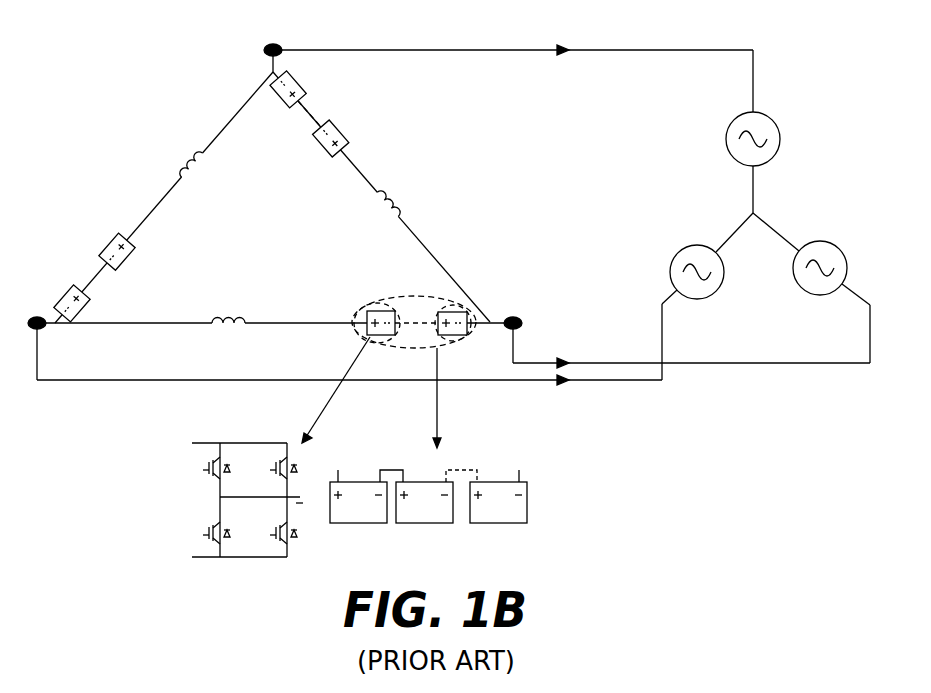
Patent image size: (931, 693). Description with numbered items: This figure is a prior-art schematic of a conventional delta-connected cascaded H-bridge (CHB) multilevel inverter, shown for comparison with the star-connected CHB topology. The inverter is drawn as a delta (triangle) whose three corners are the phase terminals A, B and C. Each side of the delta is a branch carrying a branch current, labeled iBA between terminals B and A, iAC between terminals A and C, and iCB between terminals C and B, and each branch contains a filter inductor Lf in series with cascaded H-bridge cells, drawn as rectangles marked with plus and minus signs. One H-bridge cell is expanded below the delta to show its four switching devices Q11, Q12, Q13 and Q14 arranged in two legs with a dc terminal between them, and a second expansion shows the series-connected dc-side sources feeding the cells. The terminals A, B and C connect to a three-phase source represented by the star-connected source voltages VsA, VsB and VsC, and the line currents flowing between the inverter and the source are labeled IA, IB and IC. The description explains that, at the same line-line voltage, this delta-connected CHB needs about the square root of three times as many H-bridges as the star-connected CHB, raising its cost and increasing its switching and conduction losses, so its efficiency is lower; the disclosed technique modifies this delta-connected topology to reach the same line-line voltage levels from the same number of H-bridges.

The phase node A is at (273, 45).
The phase node B is at (37, 311).
The phase node C is at (514, 307).
The phase A line current IA is at (513, 67).
The phase B line current IB is at (349, 360).
The phase C line current IC is at (691, 336).
The phase A source voltage VsA is at (776, 162).
The phase B source voltage VsB is at (700, 258).
The phase C source voltage VsC is at (811, 259).
The branch current B-A iBA is at (251, 84).
The branch current A-C iAC is at (475, 294).
The branch current C-B iCB is at (88, 333).
The filter inductor Lf is at (290, 236).
The switching transistor Q11 is at (226, 470).
The switching transistor Q12 is at (265, 480).
The switching transistor Q13 is at (226, 527).
The switching transistor Q14 is at (266, 527).